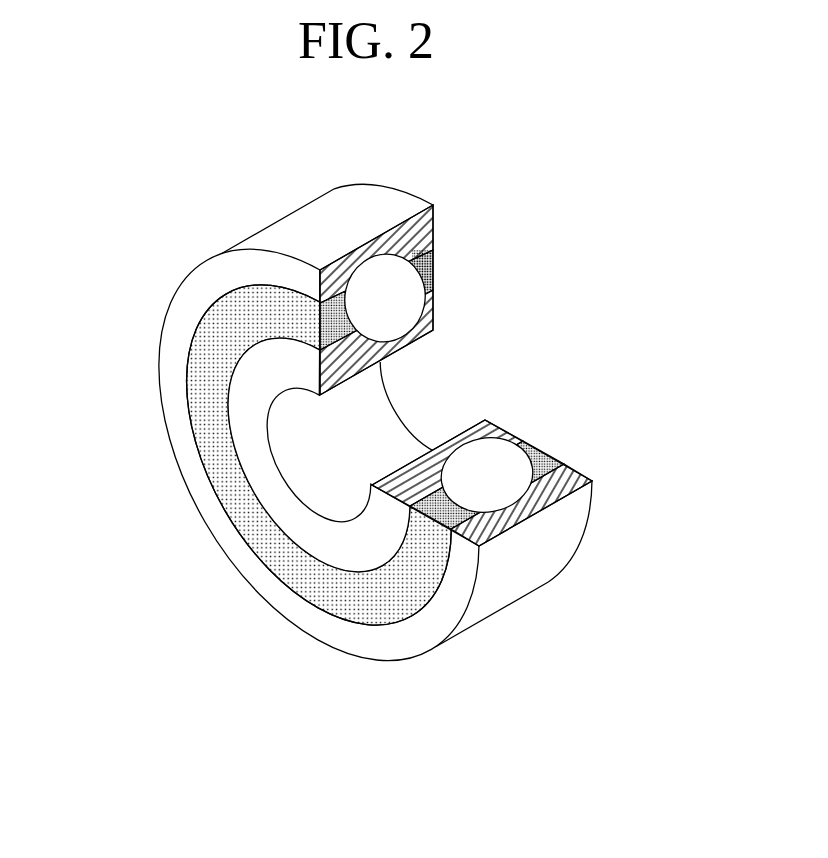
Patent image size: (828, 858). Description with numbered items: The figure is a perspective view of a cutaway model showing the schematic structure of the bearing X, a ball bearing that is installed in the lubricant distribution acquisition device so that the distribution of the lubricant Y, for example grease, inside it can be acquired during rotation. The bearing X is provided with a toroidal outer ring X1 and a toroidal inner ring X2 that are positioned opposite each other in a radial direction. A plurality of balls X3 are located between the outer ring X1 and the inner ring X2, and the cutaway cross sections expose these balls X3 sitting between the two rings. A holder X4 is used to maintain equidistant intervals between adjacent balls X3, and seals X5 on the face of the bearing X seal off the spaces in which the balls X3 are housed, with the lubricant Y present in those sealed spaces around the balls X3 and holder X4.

The bearing X is at (214, 182).
The outer ring X1 is at (404, 242).
The inner ring X2 is at (362, 367).
The balls X3 is at (403, 307).
The holder X4 is at (322, 332).
The seals X5 is at (537, 452).
The lubricant Y is at (433, 268).